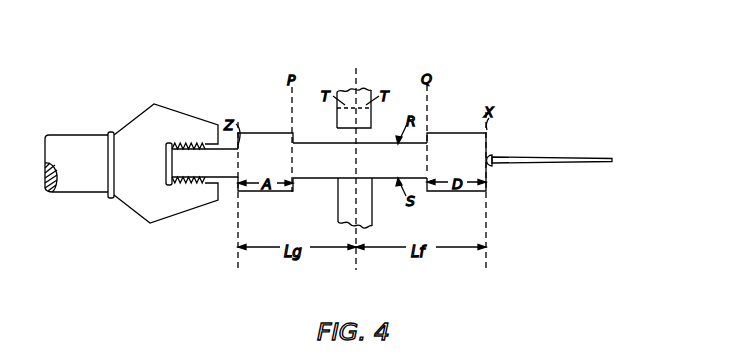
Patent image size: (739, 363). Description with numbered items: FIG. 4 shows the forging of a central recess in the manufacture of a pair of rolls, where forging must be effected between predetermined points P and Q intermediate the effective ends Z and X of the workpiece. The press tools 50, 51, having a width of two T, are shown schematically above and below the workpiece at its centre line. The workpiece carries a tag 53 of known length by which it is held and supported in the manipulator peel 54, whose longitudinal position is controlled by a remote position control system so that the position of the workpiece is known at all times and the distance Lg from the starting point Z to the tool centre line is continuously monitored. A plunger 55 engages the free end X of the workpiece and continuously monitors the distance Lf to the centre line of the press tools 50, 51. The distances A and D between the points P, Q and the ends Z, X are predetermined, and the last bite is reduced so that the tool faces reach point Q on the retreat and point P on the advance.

The press tool 50 is at (349, 91).
The press tool 51 is at (348, 211).
The tag 53 is at (212, 168).
The manipulator peel 54 is at (128, 199).
The plunger 55 is at (546, 149).